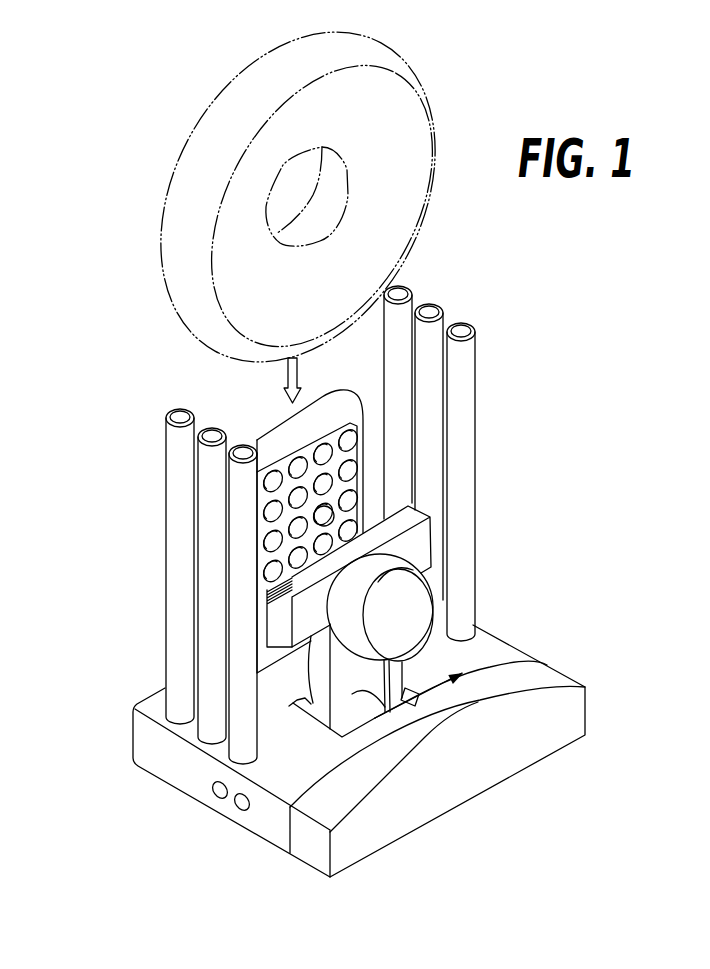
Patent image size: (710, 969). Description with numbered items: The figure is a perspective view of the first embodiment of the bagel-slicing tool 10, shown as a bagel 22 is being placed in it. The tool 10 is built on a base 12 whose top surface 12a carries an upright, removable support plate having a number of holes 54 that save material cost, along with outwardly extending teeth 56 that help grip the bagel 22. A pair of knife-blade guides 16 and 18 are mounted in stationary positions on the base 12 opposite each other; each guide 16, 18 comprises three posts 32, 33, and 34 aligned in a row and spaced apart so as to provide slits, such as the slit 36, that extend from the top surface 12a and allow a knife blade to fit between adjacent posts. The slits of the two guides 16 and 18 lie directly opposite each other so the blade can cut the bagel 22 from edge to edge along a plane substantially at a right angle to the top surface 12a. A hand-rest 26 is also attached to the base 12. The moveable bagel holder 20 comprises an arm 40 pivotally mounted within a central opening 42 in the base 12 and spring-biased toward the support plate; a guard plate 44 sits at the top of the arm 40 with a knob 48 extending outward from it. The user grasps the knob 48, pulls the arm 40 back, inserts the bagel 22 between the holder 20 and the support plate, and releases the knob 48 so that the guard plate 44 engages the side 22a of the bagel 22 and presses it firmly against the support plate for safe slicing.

The tool 10 is at (162, 378).
The base 12 is at (490, 650).
The top surface 12a is at (323, 757).
The knife-blade guide 16 is at (176, 557).
The knife-blade guide 18 is at (505, 323).
The bagel holder 20 is at (451, 666).
The bagel 22 is at (409, 128).
The side of the bagel 22a is at (340, 297).
The hand-rest 26 is at (347, 782).
The post 32 is at (175, 410).
The post 33 is at (226, 448).
The post 34 is at (252, 492).
The slit 36 is at (178, 443).
The arm 40 is at (390, 717).
The central opening 42 is at (300, 699).
The guard plate 44 is at (436, 544).
The knob 48 is at (400, 561).
The holes 54 is at (338, 486).
The teeth 56 is at (328, 516).